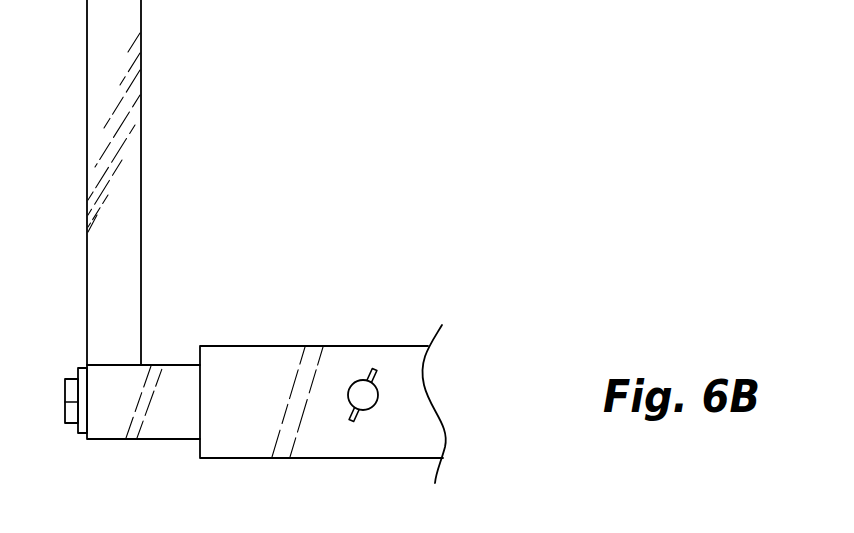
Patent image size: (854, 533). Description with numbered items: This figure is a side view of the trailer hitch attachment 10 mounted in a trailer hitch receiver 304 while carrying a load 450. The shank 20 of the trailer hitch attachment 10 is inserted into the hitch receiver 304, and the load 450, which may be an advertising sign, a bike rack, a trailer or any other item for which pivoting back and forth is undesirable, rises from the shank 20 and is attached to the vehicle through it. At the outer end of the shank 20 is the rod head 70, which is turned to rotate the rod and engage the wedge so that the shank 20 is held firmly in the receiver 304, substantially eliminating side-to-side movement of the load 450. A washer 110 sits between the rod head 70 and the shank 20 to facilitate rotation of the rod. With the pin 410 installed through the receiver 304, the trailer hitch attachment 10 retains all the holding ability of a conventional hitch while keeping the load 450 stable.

The load 450 is at (125, 172).
The trailer hitch attachment 10 is at (145, 440).
The shank 20 is at (163, 372).
The trailer hitch receiver 304 is at (265, 367).
The pin 410 is at (363, 383).
The washer 110 is at (83, 433).
The rod head 70 is at (73, 381).